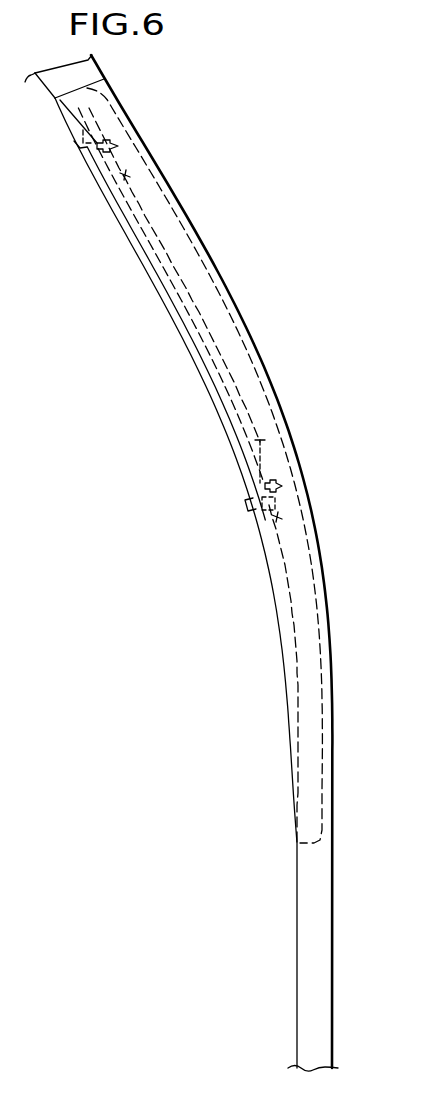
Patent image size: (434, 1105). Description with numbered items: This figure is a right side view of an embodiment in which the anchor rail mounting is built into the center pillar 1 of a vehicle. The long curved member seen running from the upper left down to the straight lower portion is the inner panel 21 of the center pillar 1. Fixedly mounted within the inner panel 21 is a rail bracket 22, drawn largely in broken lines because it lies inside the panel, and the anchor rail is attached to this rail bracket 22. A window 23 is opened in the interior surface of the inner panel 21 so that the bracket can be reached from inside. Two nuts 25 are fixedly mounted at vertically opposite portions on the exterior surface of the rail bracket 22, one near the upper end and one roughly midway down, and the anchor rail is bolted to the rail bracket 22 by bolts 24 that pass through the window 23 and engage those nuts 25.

The center pillar 1 is at (181, 563).
The inner panel 21 is at (306, 920).
The rail bracket 22 is at (292, 632).
The window 23 is at (190, 347).
The bolts 24 is at (98, 158).
The nuts 25 is at (117, 146).